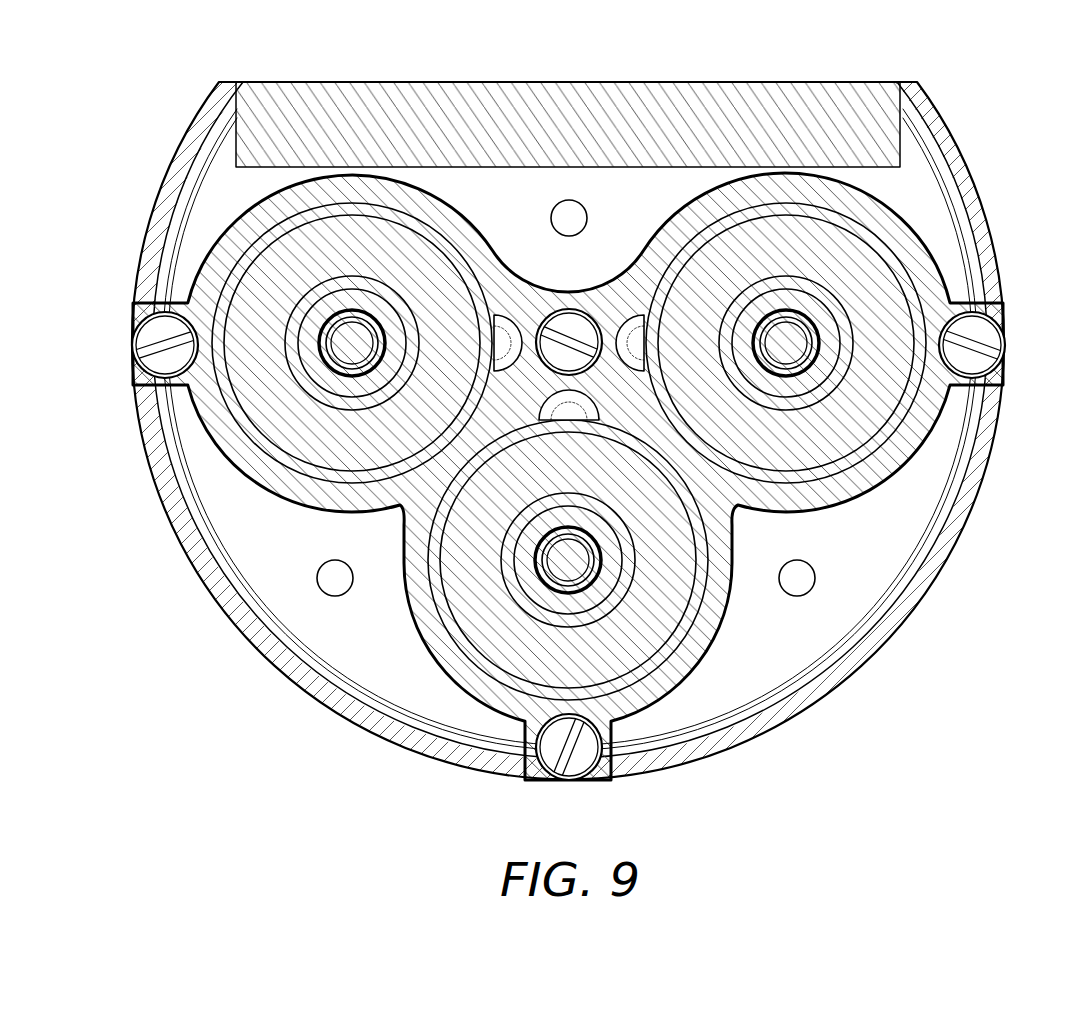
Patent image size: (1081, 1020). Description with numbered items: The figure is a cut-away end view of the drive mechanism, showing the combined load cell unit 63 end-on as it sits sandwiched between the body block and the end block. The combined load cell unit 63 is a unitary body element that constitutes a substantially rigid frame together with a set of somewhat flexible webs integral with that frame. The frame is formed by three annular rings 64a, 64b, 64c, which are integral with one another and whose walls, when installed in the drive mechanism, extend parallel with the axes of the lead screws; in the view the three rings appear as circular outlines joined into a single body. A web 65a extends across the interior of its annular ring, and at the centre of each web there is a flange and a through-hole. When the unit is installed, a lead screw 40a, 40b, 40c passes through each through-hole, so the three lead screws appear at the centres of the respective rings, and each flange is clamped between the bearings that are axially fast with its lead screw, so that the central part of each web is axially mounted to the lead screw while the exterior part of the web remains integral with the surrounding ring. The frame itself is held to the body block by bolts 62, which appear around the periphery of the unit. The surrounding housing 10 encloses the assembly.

The housing 10 is at (915, 170).
The combined load cell unit 63 is at (918, 237).
The bolts 62 is at (150, 325).
The annular ring 64a is at (385, 195).
The annular ring 64b is at (445, 652).
The annular ring 64c is at (795, 190).
The web 65a is at (325, 250).
The lead screw 40a is at (348, 355).
The lead screw 40b is at (553, 565).
The lead screw 40c is at (788, 360).